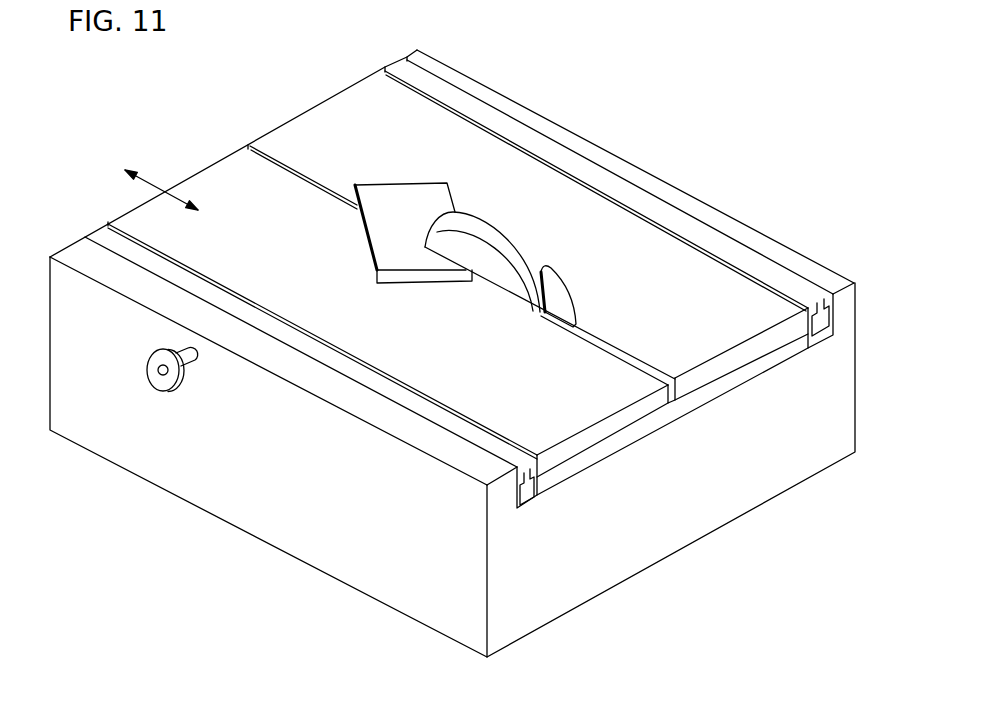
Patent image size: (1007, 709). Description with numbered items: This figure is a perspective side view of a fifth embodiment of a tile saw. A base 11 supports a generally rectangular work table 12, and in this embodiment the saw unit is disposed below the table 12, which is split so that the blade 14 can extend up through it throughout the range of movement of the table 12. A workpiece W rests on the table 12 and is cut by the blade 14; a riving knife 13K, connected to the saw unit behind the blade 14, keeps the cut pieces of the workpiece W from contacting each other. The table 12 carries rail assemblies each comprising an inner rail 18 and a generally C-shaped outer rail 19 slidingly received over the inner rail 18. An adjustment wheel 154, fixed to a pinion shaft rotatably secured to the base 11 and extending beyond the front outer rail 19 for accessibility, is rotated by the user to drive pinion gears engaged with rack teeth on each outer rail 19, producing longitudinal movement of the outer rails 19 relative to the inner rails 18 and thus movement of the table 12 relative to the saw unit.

The base 11 is at (838, 360).
The work table 12 is at (687, 282).
The riving knife 13K is at (561, 278).
The blade 14 is at (488, 248).
The inner rail 18 is at (513, 480).
The outer rail 19 is at (100, 230).
The adjustment wheel 154 is at (158, 380).
The workpiece W is at (430, 197).